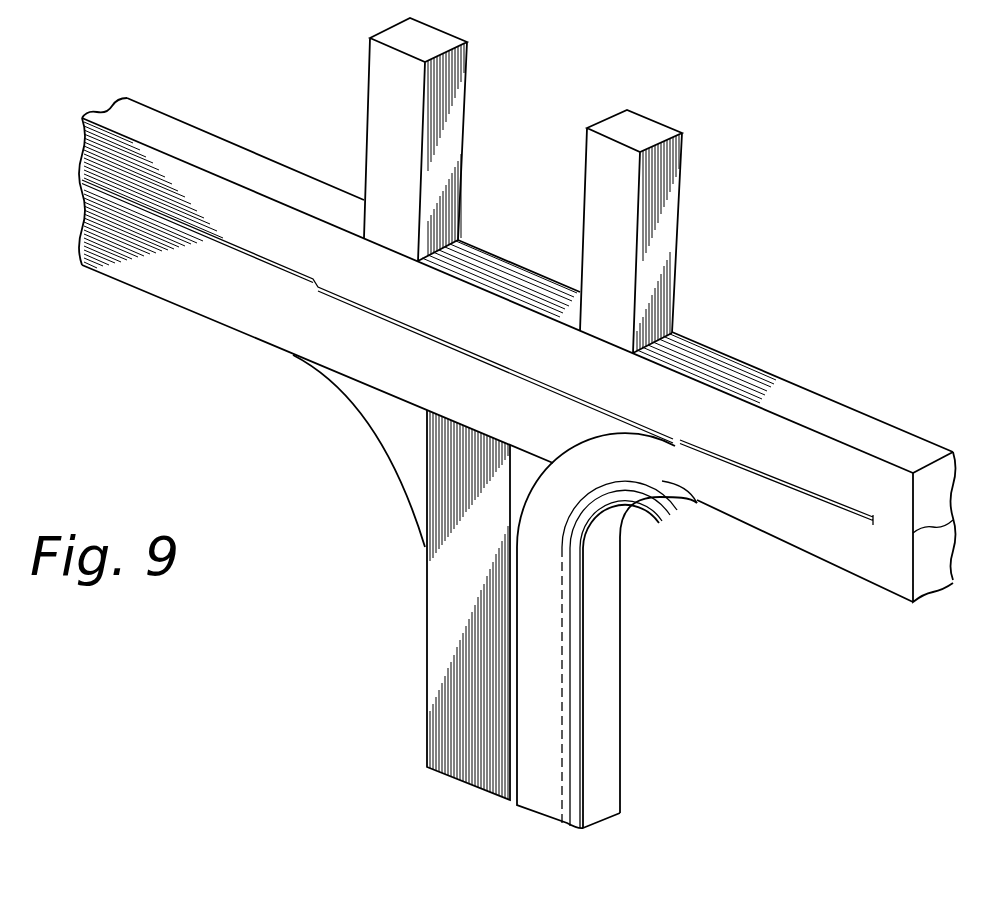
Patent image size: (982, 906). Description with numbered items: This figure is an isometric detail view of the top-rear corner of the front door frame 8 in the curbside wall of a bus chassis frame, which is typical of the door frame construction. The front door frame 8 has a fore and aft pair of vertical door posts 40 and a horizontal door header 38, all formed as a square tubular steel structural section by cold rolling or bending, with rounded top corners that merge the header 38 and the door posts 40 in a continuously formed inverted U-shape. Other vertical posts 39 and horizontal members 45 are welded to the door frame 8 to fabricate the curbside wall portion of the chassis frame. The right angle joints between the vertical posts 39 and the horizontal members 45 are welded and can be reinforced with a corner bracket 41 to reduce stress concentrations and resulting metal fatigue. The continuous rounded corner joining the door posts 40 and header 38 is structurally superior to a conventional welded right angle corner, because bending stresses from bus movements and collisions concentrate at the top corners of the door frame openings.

The horizontal member 45 is at (210, 134).
The vertical post 39 is at (463, 137).
The corner bracket 41 is at (370, 427).
The vertical door post 40 is at (620, 640).
The front door frame 8 is at (625, 707).
The horizontal door header 38 is at (832, 569).